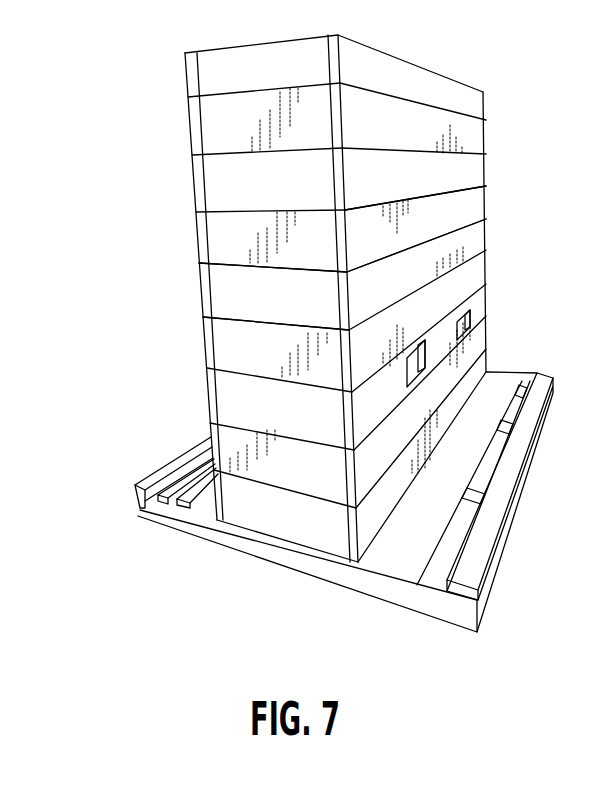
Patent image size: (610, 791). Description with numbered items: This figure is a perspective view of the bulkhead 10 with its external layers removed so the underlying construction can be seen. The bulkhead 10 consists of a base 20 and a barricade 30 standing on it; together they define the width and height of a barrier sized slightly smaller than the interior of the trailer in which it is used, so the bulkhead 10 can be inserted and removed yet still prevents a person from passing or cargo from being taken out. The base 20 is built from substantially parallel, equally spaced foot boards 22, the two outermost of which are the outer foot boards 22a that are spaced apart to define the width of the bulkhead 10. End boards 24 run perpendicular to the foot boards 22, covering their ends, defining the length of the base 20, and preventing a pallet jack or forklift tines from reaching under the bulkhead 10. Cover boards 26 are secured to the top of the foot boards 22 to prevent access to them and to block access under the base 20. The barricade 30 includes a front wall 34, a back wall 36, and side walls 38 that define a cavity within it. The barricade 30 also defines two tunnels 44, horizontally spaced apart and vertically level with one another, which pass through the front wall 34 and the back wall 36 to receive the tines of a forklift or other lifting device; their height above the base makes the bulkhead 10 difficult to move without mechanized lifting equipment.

The bulkhead 10 is at (80, 182).
The base 20 is at (336, 578).
The foot boards 22 is at (367, 589).
The outer foot boards 22a is at (218, 530).
The end boards 24 is at (133, 508).
The cover boards 26 is at (207, 487).
The barricade 30 is at (195, 240).
The front wall 34 is at (470, 207).
The back wall 36 is at (192, 182).
The side walls 38 is at (236, 303).
The tunnels 44 is at (413, 343).